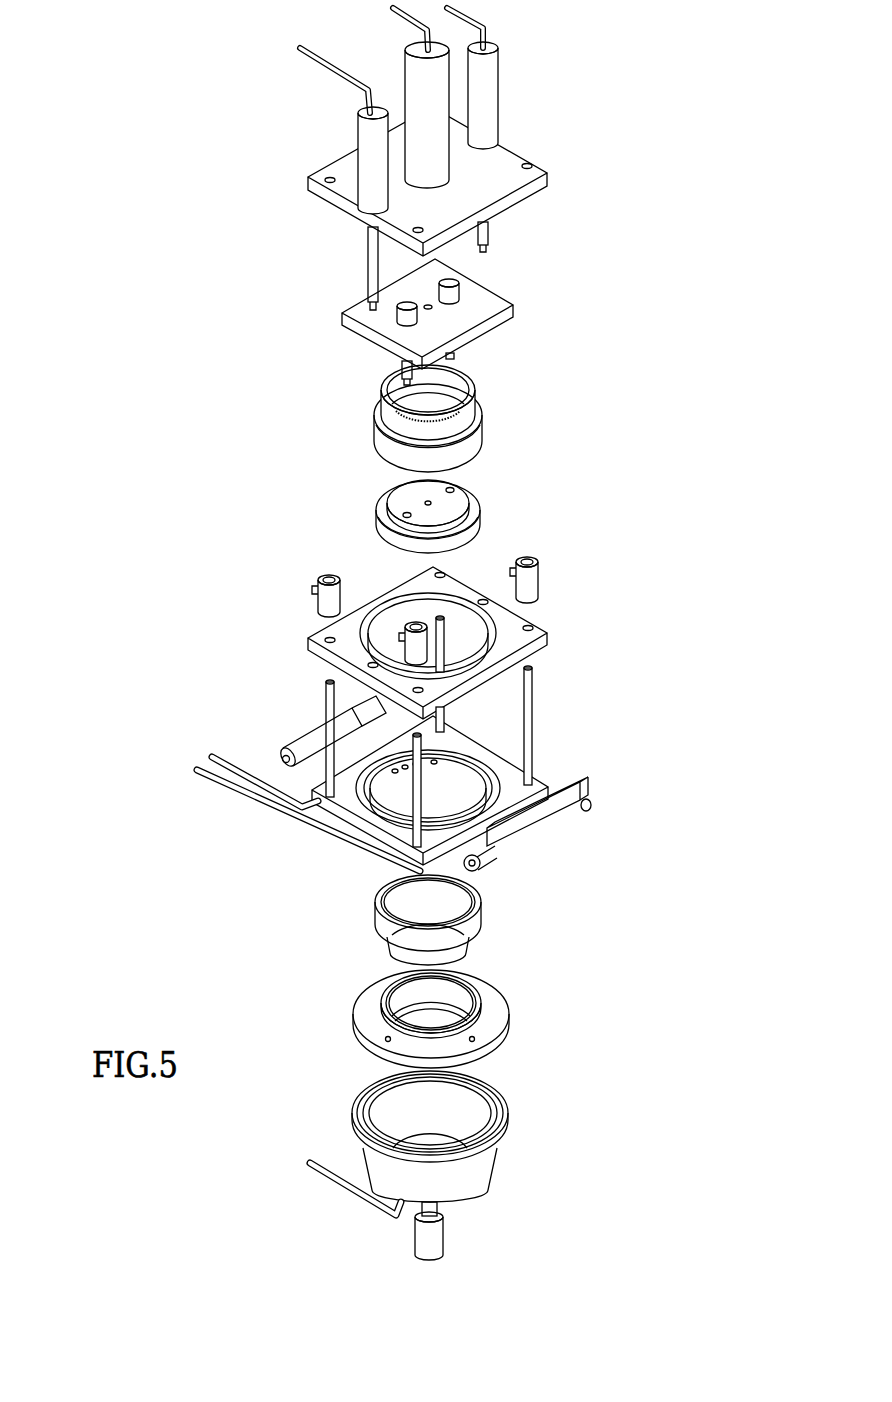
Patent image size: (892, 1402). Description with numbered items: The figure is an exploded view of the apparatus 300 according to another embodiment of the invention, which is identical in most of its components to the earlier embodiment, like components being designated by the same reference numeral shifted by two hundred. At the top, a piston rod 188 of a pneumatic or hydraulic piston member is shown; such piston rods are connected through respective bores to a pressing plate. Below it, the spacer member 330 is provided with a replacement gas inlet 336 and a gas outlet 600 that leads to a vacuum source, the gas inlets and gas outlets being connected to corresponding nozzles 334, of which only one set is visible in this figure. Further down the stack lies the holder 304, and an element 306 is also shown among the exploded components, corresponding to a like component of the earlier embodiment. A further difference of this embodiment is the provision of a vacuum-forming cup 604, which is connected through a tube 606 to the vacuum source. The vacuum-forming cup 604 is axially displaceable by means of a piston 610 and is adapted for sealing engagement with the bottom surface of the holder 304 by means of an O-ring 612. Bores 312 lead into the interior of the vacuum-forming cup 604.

The piston rod 188 is at (495, 231).
The apparatus 300 is at (607, 648).
The holder 304 is at (495, 1010).
The cup 306 is at (457, 948).
The bores 312 is at (404, 1043).
The spacer member 330 is at (467, 745).
The nozzles 334 is at (308, 764).
The replacement gas inlet 336 is at (238, 765).
The gas outlet 600 is at (310, 832).
The vacuum-forming cup 604 is at (473, 1177).
The tube 606 is at (342, 1188).
The piston 610 is at (437, 1242).
The O-ring 612 is at (497, 1095).